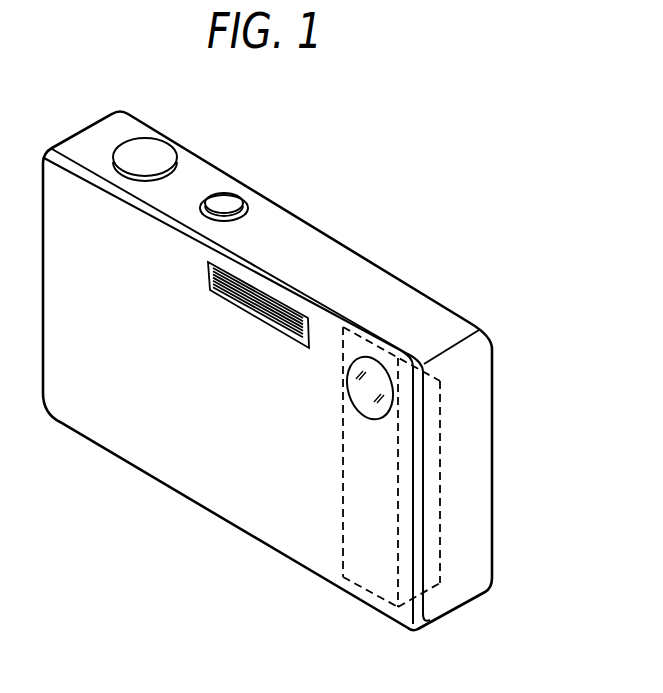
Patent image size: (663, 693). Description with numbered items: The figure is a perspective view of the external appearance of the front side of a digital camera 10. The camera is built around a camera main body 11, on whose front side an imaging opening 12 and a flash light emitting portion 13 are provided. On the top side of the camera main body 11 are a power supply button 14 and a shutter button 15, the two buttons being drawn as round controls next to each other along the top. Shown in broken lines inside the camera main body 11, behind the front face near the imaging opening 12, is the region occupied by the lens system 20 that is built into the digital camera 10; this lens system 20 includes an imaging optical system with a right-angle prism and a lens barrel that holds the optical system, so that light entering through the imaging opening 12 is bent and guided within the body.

The digital camera 10 is at (497, 206).
The camera main body 11 is at (330, 229).
The imaging opening 12 is at (370, 398).
The flash light emitting portion 13 is at (208, 267).
The power supply button 14 is at (225, 203).
The shutter button 15 is at (153, 157).
The lens system 20 is at (440, 482).